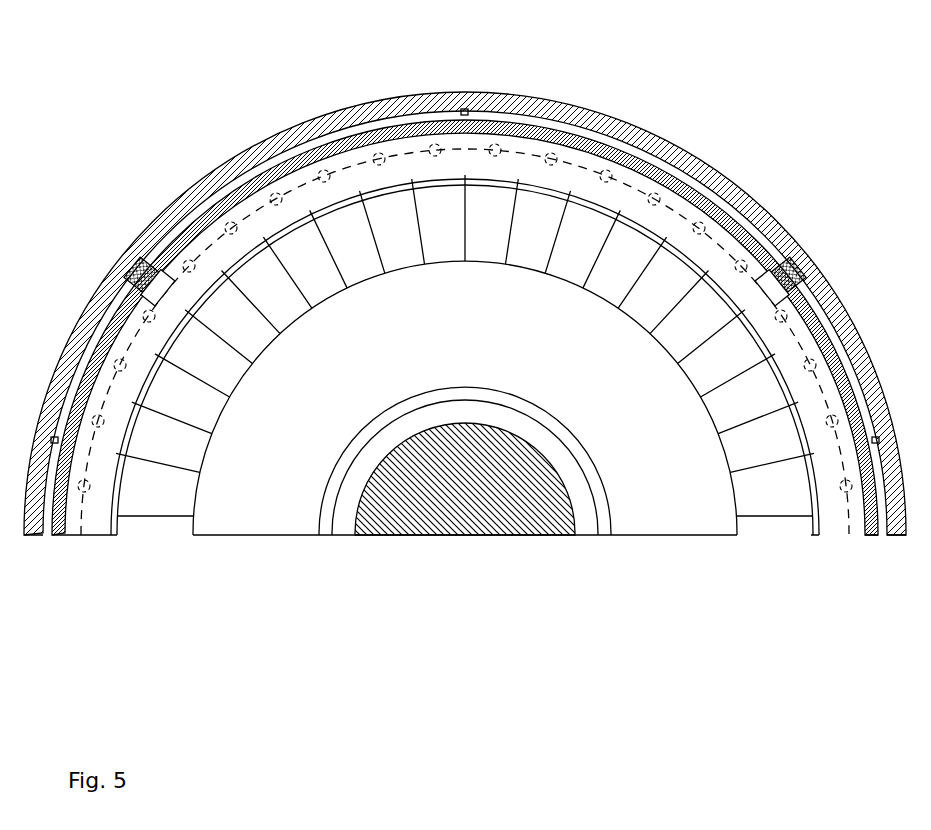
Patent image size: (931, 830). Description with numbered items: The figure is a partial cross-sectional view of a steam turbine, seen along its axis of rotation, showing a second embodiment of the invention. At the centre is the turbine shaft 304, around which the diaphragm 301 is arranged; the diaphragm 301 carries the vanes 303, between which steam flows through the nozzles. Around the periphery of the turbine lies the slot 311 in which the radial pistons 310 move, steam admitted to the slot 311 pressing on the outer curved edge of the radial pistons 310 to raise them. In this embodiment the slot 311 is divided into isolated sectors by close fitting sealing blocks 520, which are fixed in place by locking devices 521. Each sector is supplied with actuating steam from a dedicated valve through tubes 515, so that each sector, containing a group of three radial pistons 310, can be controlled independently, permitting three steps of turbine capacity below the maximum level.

The diaphragm 301 is at (285, 500).
The vanes 303 is at (163, 483).
The turbine shaft 304 is at (428, 512).
The radial pistons 310 is at (512, 122).
The slot 311 is at (631, 152).
The tubes 515 is at (463, 113).
The sealing blocks 520 is at (783, 262).
The locking devices 521 is at (130, 264).